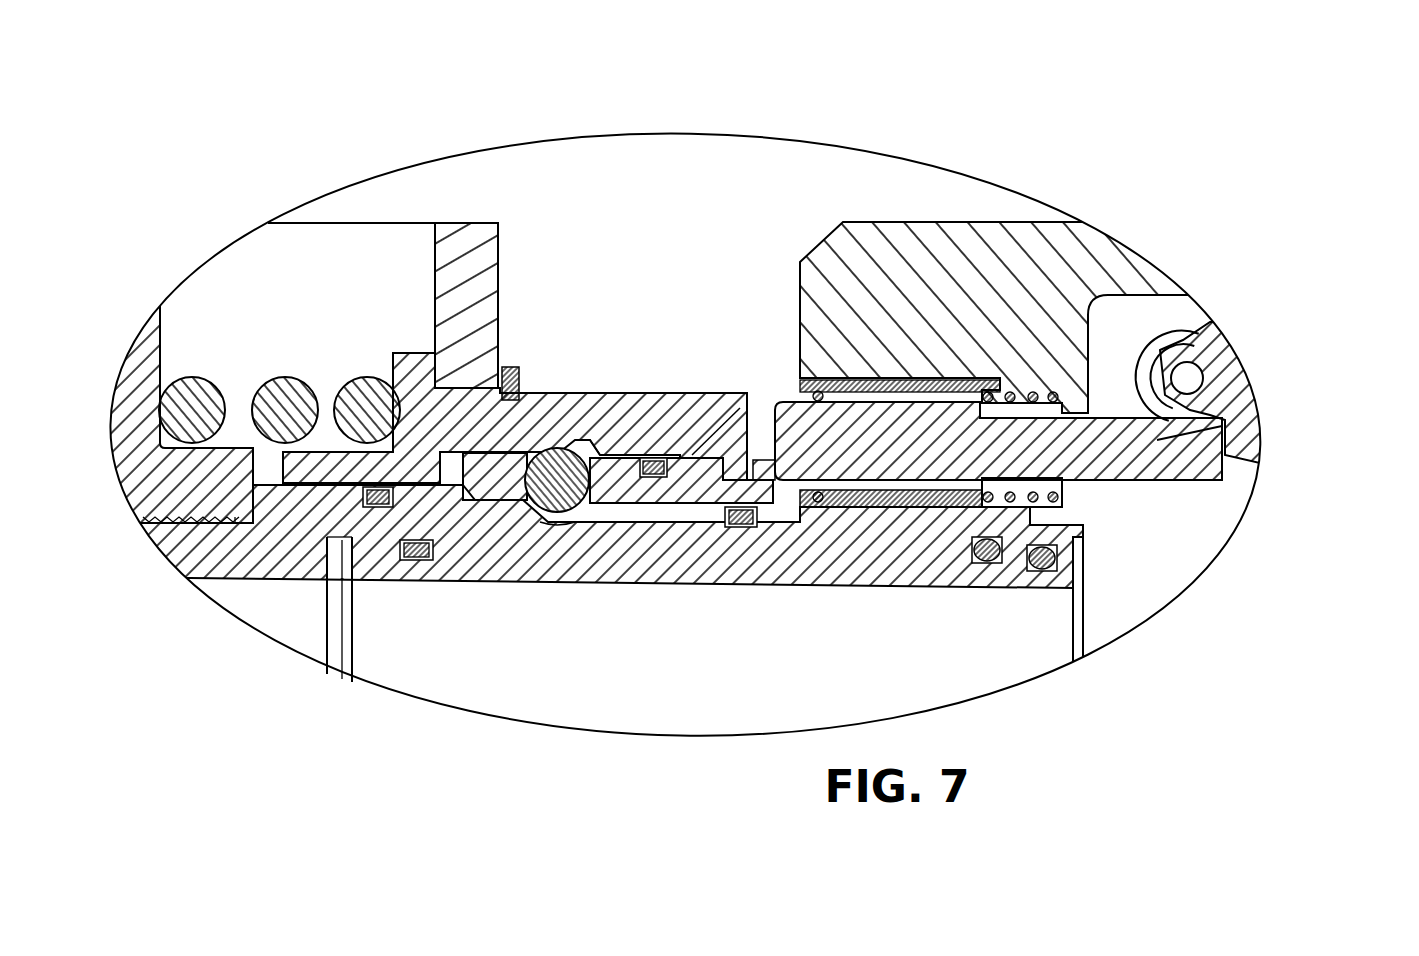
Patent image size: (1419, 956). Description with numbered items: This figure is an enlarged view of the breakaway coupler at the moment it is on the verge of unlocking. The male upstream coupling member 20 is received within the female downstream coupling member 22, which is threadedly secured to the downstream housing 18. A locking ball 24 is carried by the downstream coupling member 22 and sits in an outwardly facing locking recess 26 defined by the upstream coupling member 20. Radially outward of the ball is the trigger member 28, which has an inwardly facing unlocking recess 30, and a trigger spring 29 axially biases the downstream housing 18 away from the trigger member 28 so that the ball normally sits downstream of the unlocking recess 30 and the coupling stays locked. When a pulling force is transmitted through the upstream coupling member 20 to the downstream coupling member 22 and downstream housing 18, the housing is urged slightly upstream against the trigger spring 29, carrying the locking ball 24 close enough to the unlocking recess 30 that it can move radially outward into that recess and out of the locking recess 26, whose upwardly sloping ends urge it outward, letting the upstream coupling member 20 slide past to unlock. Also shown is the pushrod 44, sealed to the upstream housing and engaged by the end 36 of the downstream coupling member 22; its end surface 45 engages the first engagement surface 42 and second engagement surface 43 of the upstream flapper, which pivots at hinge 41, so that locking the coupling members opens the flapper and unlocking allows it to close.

The downstream housing 18 is at (135, 360).
The upstream coupling member 20 is at (617, 567).
The downstream coupling member 22 is at (280, 553).
The locking ball 24 is at (557, 470).
The locking recess 26 is at (573, 518).
The trigger member 28 is at (704, 412).
The trigger spring 29 is at (284, 375).
The unlocking recess 30 is at (600, 437).
The end of the downstream coupling member 36 is at (773, 487).
The hinge 41 is at (1190, 378).
The first engagement surface 42 is at (1157, 440).
The second engagement surface 43 is at (1226, 458).
The pushrod 44 is at (888, 447).
The end surface 45 is at (1227, 462).